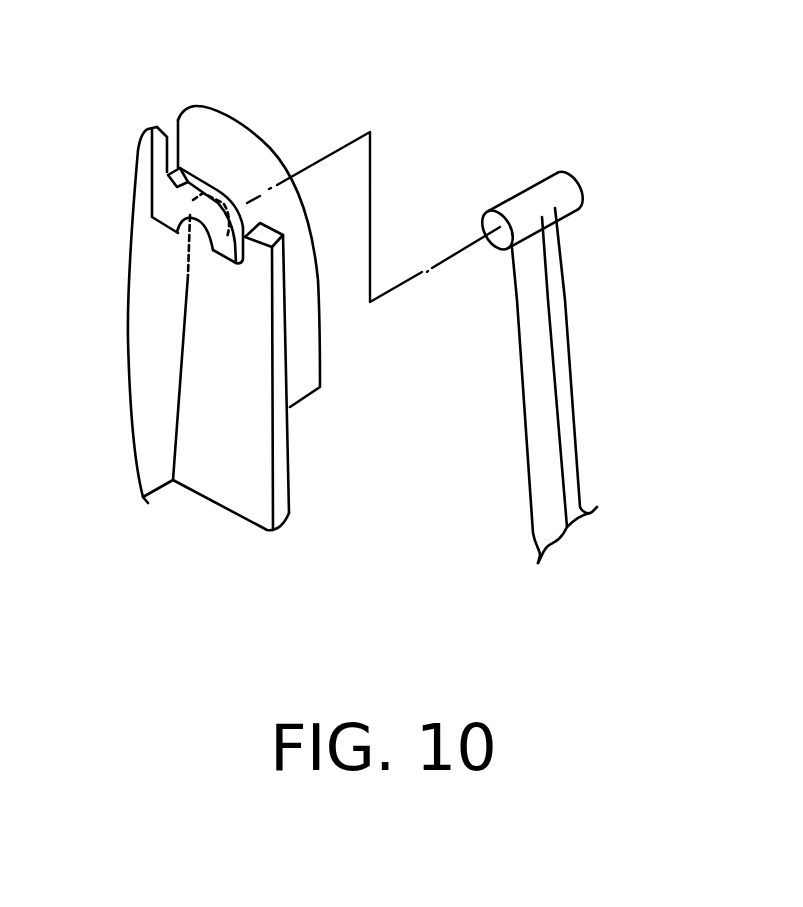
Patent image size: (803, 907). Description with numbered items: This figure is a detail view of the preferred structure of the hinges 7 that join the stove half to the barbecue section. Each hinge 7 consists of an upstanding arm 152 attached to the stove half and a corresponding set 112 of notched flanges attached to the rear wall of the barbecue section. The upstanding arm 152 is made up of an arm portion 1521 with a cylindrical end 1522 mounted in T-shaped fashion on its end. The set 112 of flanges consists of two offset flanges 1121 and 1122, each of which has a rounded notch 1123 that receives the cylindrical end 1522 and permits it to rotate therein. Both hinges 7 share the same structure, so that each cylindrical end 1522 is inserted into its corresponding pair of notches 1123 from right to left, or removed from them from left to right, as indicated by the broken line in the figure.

The hinge 7 is at (505, 417).
The set of notched flanges 112 is at (162, 248).
The flange 1121 is at (183, 193).
The flange 1122 is at (268, 462).
The rounded notch 1123 is at (253, 243).
The upstanding arm 152 is at (567, 329).
The arm portion 1521 is at (548, 360).
The cylindrical end 1522 is at (513, 205).